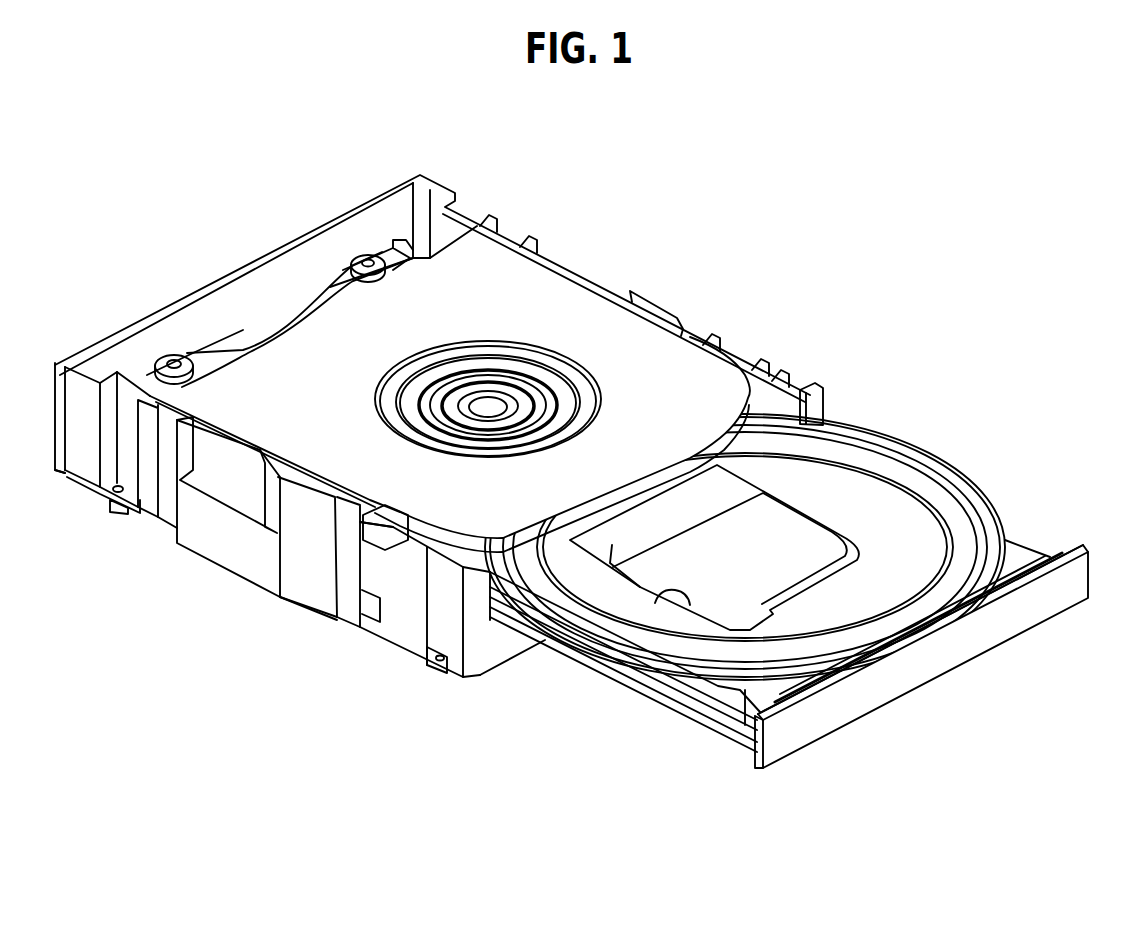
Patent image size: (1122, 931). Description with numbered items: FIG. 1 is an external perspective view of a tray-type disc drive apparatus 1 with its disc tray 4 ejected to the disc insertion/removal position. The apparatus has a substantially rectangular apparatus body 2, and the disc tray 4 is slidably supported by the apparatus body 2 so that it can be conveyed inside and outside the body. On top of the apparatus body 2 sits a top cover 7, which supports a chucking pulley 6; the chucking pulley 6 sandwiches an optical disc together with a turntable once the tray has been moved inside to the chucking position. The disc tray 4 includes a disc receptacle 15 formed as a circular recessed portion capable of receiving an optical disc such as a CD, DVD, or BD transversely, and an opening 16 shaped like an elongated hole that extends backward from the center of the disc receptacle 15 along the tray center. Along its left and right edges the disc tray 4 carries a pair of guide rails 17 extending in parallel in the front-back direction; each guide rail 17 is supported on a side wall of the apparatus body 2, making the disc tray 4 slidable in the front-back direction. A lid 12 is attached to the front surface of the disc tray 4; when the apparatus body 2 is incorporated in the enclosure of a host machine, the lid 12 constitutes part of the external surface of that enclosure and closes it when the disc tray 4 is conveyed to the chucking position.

The disc drive apparatus 1 is at (697, 134).
The apparatus body 2 is at (447, 203).
The disc tray 4 is at (995, 557).
The chucking pulley 6 is at (540, 375).
The top cover 7 is at (708, 405).
The lid 12 is at (778, 750).
The disc receptacle 15 is at (858, 492).
The opening 16 is at (655, 603).
The guide rails 17 is at (742, 715).